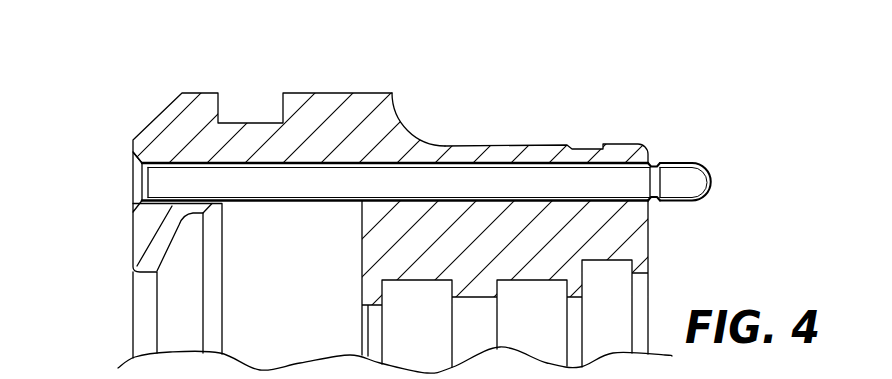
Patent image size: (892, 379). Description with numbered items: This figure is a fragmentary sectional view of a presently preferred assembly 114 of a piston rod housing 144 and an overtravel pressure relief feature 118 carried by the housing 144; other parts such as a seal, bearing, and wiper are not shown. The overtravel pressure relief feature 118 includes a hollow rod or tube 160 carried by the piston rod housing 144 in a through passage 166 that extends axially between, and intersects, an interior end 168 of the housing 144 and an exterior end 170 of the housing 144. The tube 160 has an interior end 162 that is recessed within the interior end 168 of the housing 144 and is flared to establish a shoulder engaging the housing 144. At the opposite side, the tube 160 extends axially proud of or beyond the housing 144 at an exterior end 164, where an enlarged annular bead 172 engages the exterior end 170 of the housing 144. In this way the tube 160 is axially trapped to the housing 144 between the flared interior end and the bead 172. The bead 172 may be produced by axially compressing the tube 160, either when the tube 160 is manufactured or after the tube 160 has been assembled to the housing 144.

The assembly 114 is at (186, 51).
The overtravel pressure relief feature 118 is at (768, 173).
The piston rod housing 144 is at (406, 65).
The hollow rod or tube 160 is at (521, 142).
The interior end 162 is at (137, 178).
The exterior end 164 is at (710, 182).
The through passage 166 is at (437, 203).
The interior end 168 is at (142, 229).
The exterior end 170 is at (633, 228).
The enlarged annular bead 172 is at (664, 151).